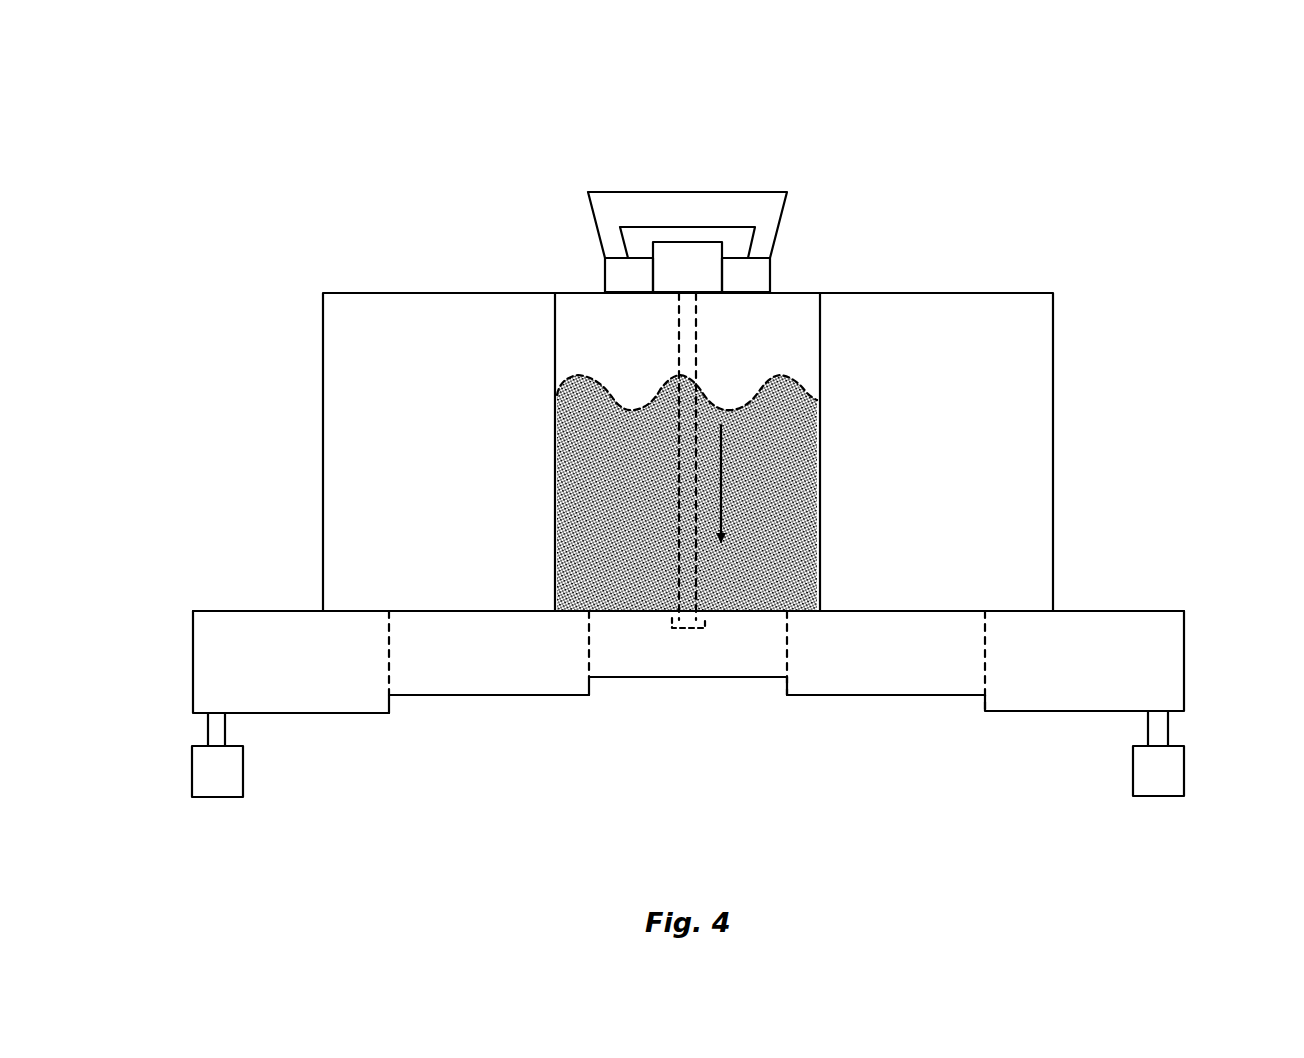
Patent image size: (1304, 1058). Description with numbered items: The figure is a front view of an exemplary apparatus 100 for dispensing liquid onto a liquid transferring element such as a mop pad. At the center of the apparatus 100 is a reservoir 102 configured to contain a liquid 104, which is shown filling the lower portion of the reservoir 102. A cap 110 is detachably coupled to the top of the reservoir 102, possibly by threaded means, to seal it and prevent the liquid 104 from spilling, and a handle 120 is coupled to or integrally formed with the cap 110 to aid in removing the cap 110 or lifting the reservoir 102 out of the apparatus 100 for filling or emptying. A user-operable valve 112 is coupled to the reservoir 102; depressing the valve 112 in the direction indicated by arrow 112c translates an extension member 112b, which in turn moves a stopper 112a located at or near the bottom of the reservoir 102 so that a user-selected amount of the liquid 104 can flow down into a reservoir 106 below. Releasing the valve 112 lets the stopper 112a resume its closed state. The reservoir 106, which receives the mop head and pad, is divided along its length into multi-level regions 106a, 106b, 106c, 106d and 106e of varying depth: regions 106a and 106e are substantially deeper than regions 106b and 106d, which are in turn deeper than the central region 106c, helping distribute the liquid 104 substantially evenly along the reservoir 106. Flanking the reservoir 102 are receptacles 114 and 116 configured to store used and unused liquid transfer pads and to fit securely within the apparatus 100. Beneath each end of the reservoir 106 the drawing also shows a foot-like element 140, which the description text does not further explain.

The apparatus 100 is at (256, 146).
The reservoir 102 is at (588, 318).
The liquid 104 is at (797, 599).
The reservoir 106 is at (1184, 660).
The region 106a is at (325, 682).
The region 106b is at (527, 663).
The region 106c is at (613, 660).
The region 106d is at (920, 663).
The region 106e is at (1118, 681).
The cap 110 is at (772, 274).
The user-operable valve 112 is at (690, 242).
The stopper 112a is at (690, 618).
The extension member 112b is at (687, 334).
The arrow 112c is at (724, 478).
The receptacle 114 is at (1053, 451).
The receptacle 116 is at (323, 451).
The handle 120 is at (685, 192).
The actuator 140 is at (192, 771).